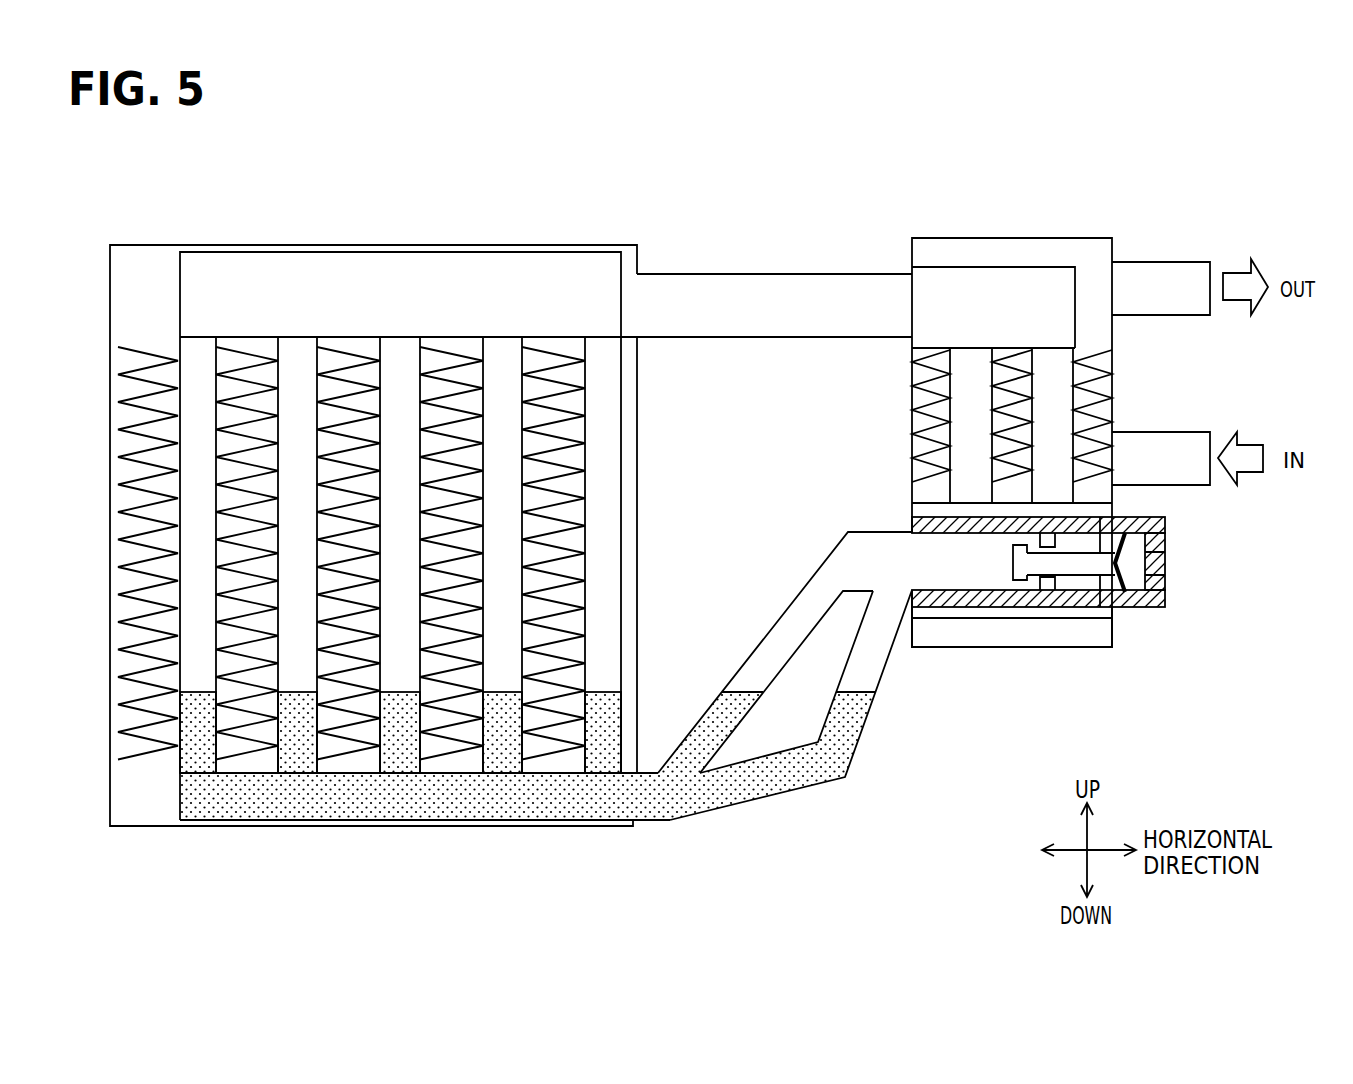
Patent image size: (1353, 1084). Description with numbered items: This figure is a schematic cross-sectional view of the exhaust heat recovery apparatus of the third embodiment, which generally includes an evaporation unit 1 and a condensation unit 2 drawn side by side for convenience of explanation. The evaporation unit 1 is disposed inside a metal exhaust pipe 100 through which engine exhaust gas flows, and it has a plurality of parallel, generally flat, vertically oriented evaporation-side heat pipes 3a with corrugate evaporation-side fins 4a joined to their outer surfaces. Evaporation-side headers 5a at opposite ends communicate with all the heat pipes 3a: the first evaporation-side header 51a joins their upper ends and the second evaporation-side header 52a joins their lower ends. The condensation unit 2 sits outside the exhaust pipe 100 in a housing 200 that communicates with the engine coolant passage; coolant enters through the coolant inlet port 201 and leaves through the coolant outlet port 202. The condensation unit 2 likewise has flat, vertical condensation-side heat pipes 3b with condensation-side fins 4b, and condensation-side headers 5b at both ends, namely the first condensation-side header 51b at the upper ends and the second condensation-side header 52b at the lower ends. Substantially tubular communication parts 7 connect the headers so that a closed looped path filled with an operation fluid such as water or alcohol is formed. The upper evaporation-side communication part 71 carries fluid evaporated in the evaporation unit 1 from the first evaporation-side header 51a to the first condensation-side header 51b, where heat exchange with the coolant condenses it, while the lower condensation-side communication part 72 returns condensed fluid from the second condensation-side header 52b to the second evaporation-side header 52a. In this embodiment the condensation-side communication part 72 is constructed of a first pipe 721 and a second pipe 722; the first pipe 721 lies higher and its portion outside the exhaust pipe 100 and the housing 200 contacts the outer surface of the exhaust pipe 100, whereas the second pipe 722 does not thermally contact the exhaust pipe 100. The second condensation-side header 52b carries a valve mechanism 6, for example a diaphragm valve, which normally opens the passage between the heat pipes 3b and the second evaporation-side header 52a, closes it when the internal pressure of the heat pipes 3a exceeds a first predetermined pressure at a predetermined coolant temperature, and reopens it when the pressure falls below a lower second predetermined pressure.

The exhaust pipe 100 is at (148, 244).
The evaporation unit 1 is at (369, 471).
The evaporation-side heat pipes 3a is at (377, 347).
The evaporation-side fins 4a is at (447, 348).
The evaporation-side headers 5a is at (425, 518).
The first evaporation-side header 51a is at (533, 272).
The second evaporation-side header 52a is at (255, 802).
The communication parts 7 is at (774, 560).
The evaporation-side communication part 71 is at (730, 288).
The condensation-side communication part 72 is at (774, 734).
The first pipe 721 is at (722, 718).
The second pipe 722 is at (830, 757).
The condensation unit 2 is at (1058, 333).
The condensation-side heat pipes 3b is at (1093, 358).
The condensation-side fins 4b is at (1113, 410).
The condensation-side headers 5b is at (1012, 466).
The first condensation-side header 51b is at (978, 297).
The second condensation-side header 52b is at (988, 618).
The housing 200 is at (1093, 238).
The coolant inlet port 201 is at (1183, 472).
The coolant outlet port 202 is at (1163, 285).
The valve mechanism 6 is at (1083, 577).